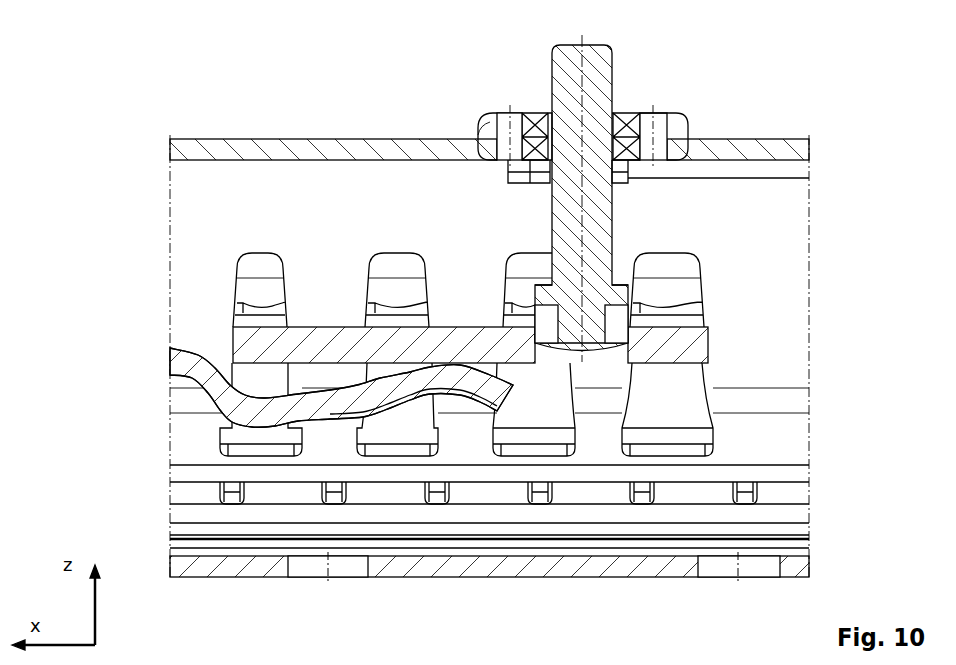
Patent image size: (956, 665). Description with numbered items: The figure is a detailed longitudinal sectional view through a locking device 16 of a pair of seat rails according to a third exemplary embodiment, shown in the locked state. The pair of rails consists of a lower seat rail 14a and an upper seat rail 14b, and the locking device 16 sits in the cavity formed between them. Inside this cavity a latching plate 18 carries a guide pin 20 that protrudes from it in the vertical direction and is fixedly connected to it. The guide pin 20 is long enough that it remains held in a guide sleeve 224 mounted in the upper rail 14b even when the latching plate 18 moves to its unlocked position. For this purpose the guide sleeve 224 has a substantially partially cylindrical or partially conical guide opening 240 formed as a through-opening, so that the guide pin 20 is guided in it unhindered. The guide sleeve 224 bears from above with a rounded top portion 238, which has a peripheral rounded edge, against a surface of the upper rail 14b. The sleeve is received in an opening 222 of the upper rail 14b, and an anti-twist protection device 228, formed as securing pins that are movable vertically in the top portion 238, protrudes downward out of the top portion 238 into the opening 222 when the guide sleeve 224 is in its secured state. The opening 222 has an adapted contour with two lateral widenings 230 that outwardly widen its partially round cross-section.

The lower seat rail 14a is at (432, 567).
The upper seat rail 14b is at (318, 147).
The locking device 16 is at (780, 224).
The latching plate 18 is at (273, 350).
The guide pin 20 is at (577, 97).
The opening 222 is at (488, 146).
The guide sleeve 224 is at (628, 118).
The anti-twist protection device 228 is at (509, 125).
The lateral widening 230 is at (667, 150).
The top portion 238 is at (488, 128).
The guide opening 240 is at (615, 118).